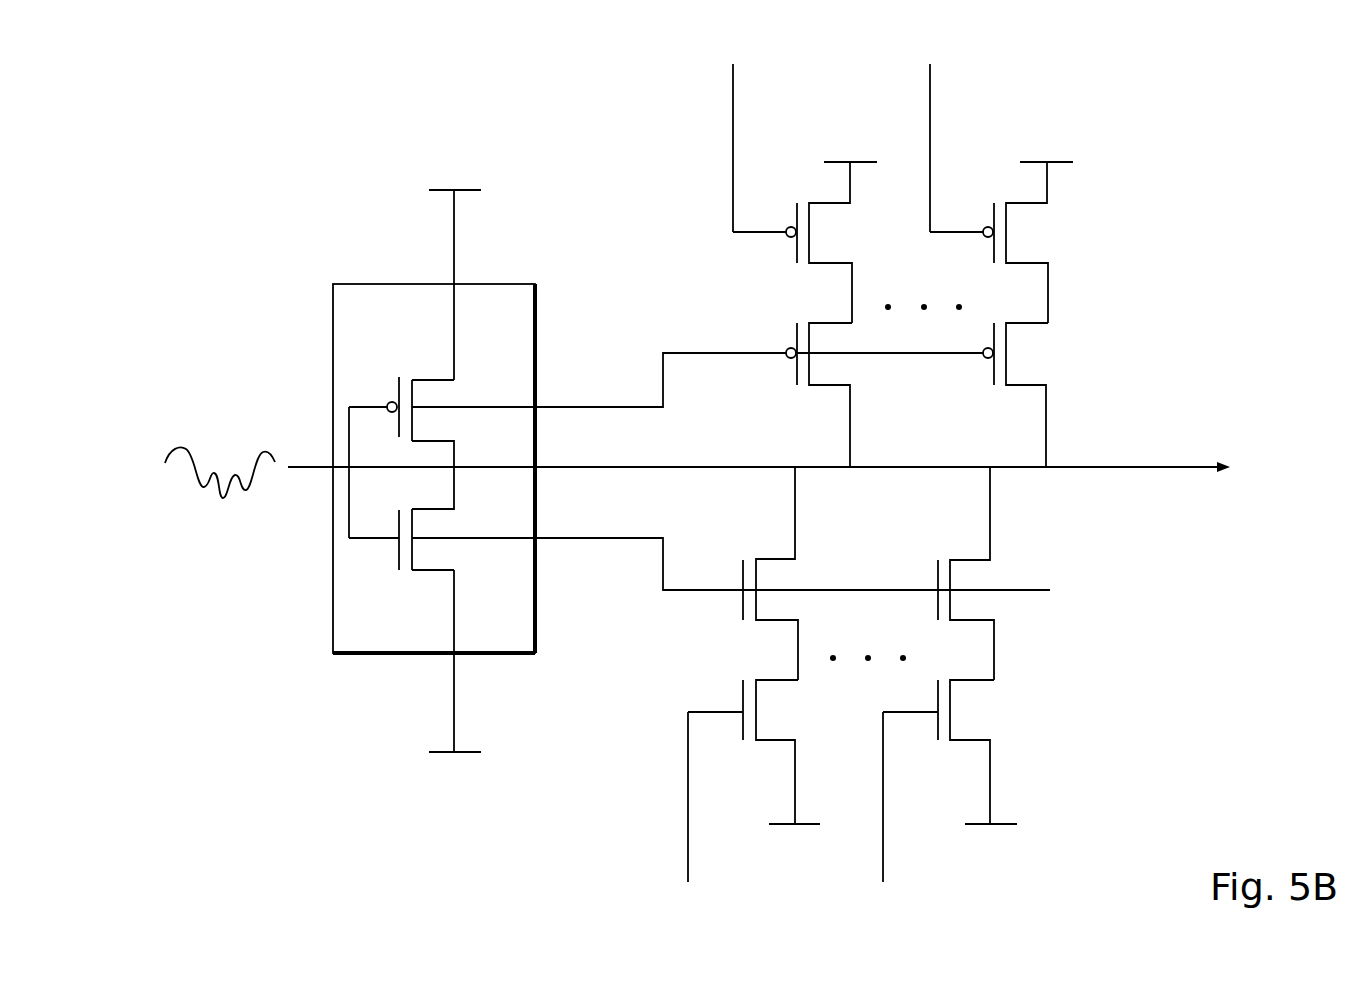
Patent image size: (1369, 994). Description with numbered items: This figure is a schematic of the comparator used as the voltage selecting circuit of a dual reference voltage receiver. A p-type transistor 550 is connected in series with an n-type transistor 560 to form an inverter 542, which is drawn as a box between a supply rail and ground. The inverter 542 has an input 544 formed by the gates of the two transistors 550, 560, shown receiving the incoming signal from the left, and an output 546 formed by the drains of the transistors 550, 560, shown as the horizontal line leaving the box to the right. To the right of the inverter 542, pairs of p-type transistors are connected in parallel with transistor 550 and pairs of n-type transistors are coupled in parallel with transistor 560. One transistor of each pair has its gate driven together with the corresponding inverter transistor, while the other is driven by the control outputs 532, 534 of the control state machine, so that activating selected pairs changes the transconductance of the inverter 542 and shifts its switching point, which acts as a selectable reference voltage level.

The output of control state machine 532 is at (930, 182).
The output of control state machine 534 is at (883, 820).
The inverter 542 is at (434, 471).
The input 544 is at (314, 440).
The output 546 is at (537, 466).
The p-type transistor 550 is at (567, 410).
The n-type transistor 560 is at (546, 528).